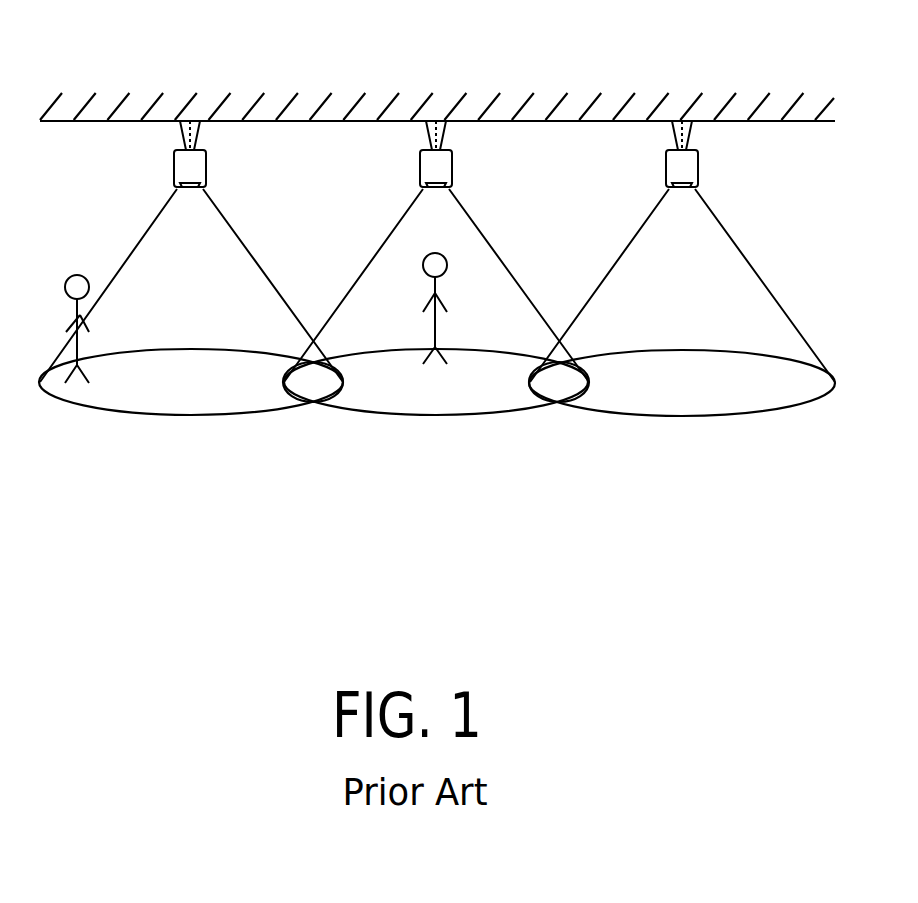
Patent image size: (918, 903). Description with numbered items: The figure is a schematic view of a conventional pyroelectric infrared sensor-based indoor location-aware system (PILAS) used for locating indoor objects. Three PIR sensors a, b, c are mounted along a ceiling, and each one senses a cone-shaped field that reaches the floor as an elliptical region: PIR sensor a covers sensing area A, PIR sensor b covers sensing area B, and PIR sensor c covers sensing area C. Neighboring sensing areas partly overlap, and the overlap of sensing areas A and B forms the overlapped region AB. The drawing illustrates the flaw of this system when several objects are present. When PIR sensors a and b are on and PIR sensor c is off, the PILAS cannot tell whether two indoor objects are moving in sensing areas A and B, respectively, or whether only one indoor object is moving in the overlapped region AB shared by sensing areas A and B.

The PIR sensor a is at (174, 168).
The PIR sensor b is at (420, 168).
The PIR sensor c is at (666, 168).
The sensing area A is at (178, 397).
The sensing area B is at (422, 397).
The sensing area C is at (668, 398).
The overlapped region AB is at (312, 398).